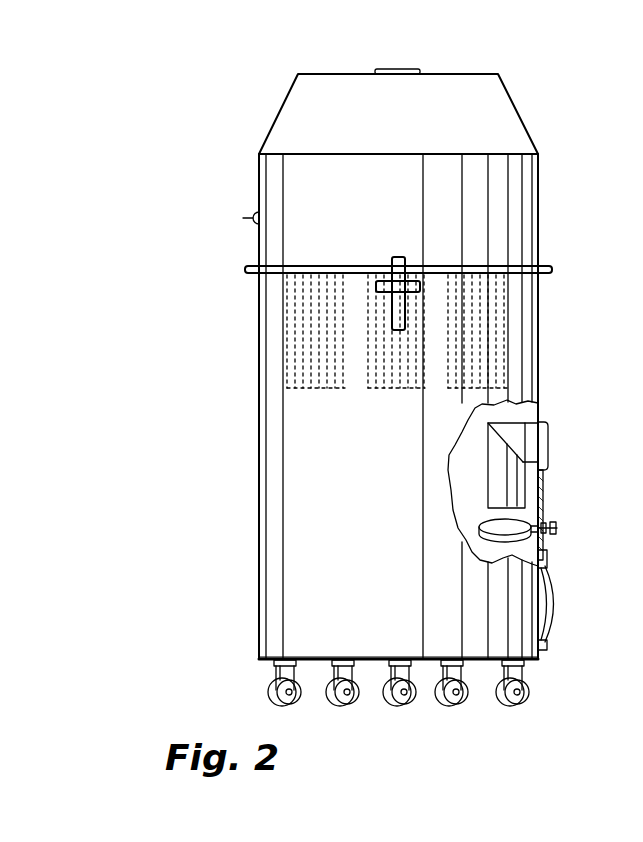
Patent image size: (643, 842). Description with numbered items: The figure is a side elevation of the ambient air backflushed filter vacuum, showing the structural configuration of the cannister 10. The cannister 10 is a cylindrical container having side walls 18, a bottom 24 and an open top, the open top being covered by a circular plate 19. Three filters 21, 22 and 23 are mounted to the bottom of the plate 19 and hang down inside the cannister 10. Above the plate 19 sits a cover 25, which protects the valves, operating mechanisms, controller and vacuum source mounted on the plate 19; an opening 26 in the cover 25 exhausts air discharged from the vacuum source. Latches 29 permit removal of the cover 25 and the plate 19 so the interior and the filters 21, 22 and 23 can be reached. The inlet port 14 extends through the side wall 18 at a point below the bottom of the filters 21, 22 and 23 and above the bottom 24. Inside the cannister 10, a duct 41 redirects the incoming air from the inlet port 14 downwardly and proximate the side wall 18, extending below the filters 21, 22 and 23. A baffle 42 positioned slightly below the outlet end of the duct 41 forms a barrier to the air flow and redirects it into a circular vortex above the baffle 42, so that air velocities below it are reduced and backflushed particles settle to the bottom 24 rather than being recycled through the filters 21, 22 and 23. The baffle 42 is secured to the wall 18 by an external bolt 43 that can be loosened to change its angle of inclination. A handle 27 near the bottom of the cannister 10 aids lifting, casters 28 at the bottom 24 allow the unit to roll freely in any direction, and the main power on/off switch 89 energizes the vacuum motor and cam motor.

The cannister 10 is at (246, 582).
The inlet port 14 is at (549, 428).
The side wall 18 is at (541, 333).
The circular plate 19 is at (549, 265).
The filter 21 is at (331, 390).
The filter 22 is at (400, 390).
The filter 23 is at (472, 390).
The bottom 24 is at (378, 640).
The cover 25 is at (540, 183).
The opening 26 is at (408, 70).
The handle 27 is at (558, 606).
The casters 28 is at (340, 708).
The latches 29 is at (395, 258).
The duct 41 is at (488, 478).
The baffle 42 is at (505, 528).
The external bolt 43 is at (558, 530).
The main power on/off switch 89 is at (251, 212).